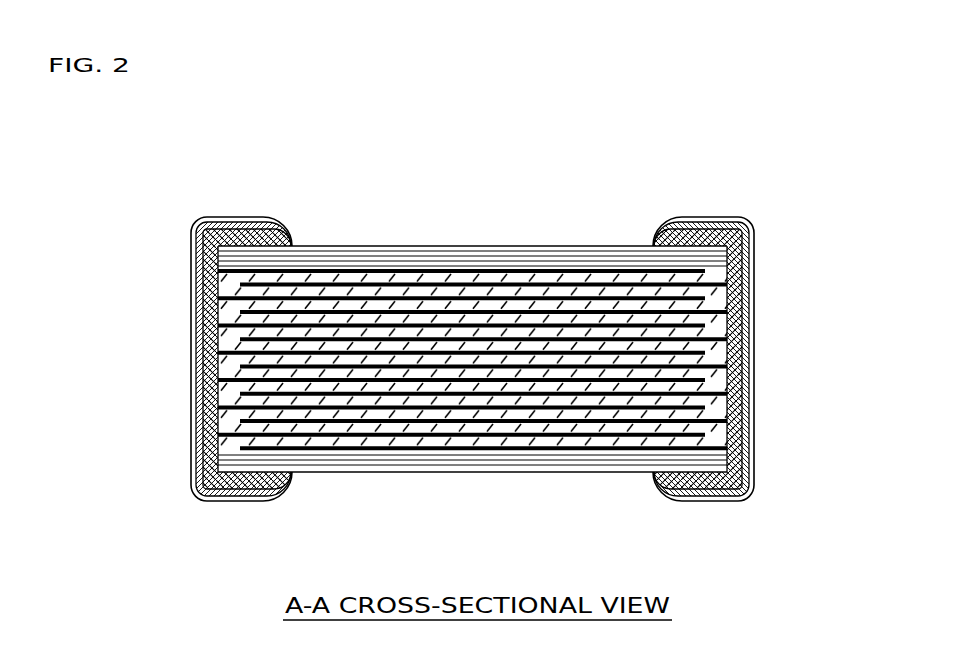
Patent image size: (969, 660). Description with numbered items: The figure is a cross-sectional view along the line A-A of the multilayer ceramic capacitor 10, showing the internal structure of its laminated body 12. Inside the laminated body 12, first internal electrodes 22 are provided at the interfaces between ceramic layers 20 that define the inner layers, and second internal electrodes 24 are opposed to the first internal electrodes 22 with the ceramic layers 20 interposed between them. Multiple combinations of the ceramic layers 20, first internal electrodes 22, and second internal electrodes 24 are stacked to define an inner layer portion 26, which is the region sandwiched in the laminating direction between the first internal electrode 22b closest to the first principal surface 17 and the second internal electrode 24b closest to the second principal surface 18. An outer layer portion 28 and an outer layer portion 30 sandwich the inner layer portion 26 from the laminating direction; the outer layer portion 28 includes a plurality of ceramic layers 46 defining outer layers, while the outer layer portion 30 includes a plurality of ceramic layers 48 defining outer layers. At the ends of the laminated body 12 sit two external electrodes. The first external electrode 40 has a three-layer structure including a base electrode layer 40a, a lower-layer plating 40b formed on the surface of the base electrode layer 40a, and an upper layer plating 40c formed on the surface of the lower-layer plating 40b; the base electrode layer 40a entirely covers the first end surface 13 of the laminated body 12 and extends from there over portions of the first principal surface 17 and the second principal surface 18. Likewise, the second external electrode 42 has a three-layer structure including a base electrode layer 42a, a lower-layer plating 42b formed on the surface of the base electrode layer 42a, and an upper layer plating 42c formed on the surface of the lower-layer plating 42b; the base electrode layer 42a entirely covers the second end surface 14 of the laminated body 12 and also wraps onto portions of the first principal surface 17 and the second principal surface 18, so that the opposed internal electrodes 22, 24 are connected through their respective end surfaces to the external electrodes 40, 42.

The multilayer ceramic capacitor 10 is at (155, 163).
The laminated body 12 is at (524, 243).
The first end surface 13 is at (218, 343).
The second end surface 14 is at (733, 440).
The first principal surface 17 is at (472, 246).
The second principal surface 18 is at (436, 474).
The ceramic layers 20 is at (517, 383).
The first internal electrodes 22 is at (348, 325).
The first internal electrode closest to the first principal surface 22b is at (643, 270).
The second internal electrodes 24 is at (603, 312).
The second internal electrode closest to the second principal surface 24b is at (602, 450).
The inner layer portion 26 is at (730, 440).
The outer layer portion 28 is at (730, 245).
The outer layer portion 30 is at (730, 472).
The first external electrode 40 is at (112, 390).
The base electrode layer 40a is at (212, 410).
The lower-layer plating 40b is at (198, 437).
The upper layer plating 40c is at (192, 470).
The second external electrode 42 is at (607, 564).
The base electrode layer 42a is at (683, 480).
The lower-layer plating 42b is at (706, 490).
The upper layer plating 42c is at (730, 497).
The ceramic layers 46 is at (387, 267).
The ceramic layers 48 is at (320, 452).